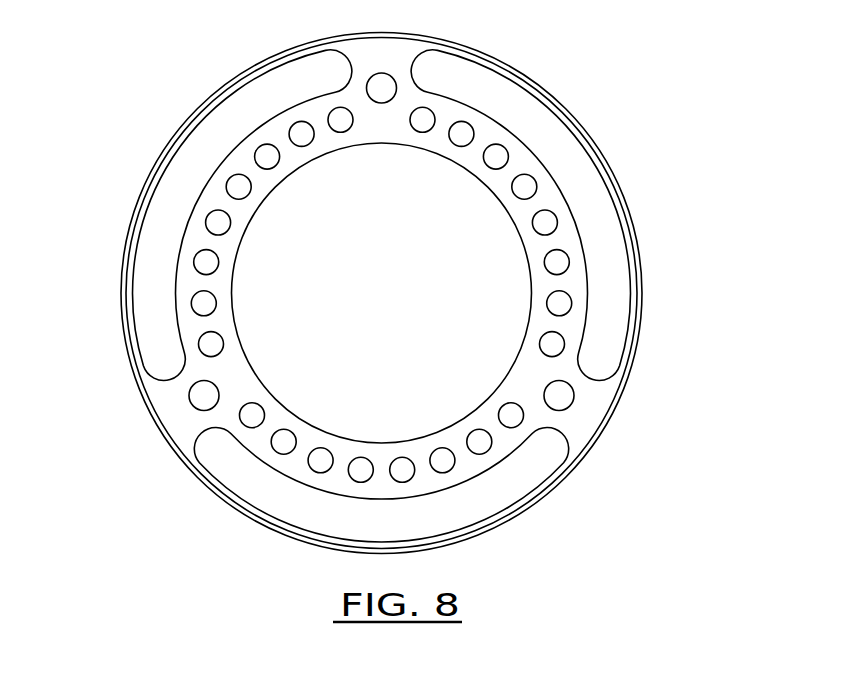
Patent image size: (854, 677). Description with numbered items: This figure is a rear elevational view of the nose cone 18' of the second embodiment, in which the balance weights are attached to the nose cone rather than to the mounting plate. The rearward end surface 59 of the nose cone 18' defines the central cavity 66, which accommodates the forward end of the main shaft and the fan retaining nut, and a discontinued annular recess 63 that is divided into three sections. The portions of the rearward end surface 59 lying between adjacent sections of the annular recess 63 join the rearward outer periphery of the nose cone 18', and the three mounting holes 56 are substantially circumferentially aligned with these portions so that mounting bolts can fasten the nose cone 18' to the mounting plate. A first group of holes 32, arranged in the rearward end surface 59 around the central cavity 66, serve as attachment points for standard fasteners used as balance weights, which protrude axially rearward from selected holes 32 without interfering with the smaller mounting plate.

The nose cone 18' is at (420, 293).
The annular recess 63 is at (196, 152).
The mounting hole 56 is at (383, 78).
The first group of holes 32 is at (213, 222).
The central cavity 66 is at (408, 312).
The rearward end surface 59 is at (577, 285).